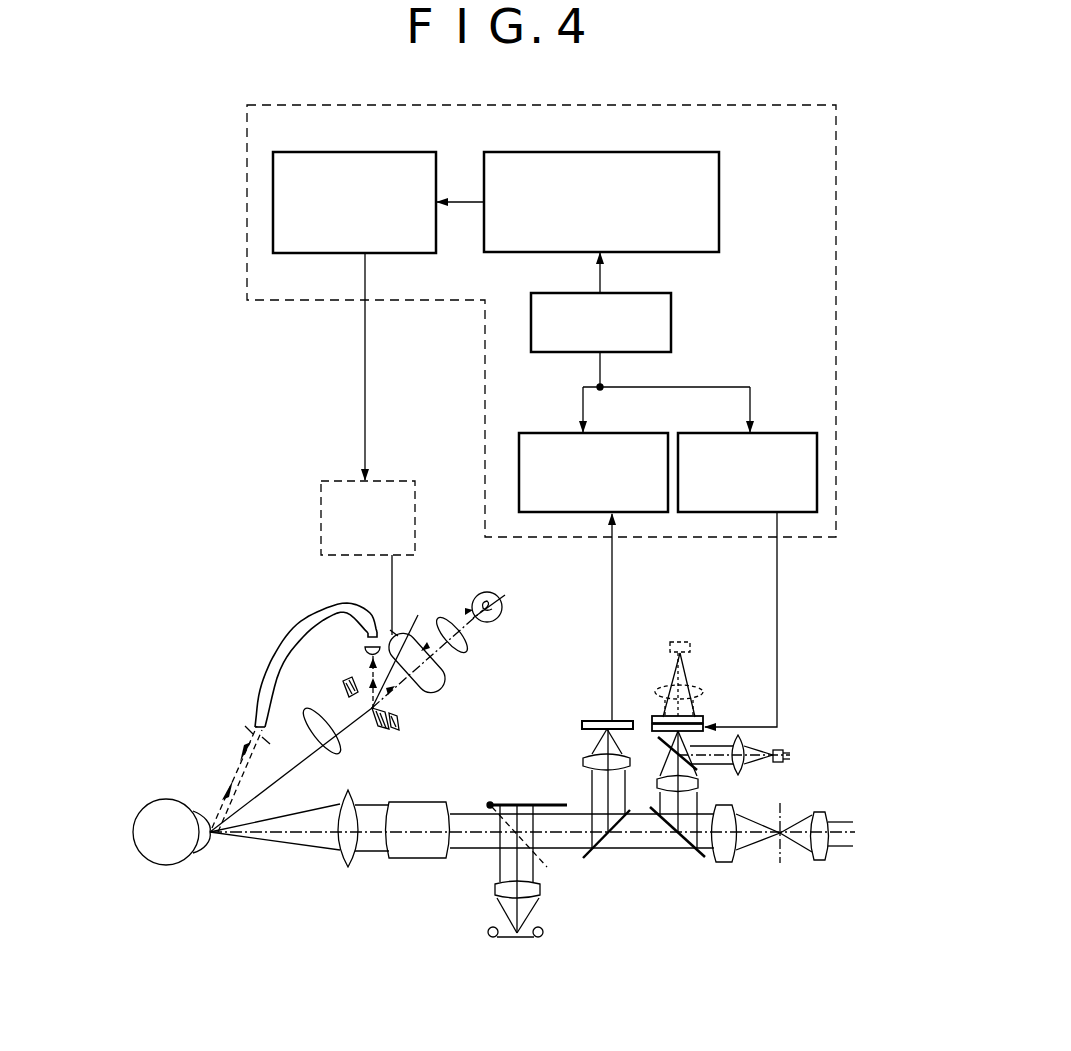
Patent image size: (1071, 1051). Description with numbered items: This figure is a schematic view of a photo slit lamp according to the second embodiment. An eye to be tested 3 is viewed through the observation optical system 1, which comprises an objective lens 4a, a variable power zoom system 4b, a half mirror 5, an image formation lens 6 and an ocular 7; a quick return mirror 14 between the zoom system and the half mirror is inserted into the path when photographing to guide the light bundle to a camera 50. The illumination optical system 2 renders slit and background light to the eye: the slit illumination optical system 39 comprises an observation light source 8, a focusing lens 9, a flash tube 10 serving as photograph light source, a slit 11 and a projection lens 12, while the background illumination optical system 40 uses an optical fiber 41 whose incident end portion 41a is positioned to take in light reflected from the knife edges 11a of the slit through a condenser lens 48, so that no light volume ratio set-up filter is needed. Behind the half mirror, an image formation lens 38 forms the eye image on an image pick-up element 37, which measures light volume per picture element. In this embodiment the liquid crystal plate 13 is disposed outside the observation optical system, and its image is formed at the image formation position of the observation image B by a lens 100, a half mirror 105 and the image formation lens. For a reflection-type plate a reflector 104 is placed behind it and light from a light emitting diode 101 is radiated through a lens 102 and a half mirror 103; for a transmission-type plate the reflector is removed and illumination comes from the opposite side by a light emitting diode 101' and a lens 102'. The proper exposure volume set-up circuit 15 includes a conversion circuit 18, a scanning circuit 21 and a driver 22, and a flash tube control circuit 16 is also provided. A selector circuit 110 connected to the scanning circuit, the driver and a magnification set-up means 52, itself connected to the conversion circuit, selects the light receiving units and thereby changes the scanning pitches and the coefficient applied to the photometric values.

The observation optical system 1 is at (671, 876).
The illumination optical system 2 is at (266, 668).
The eye to be tested 3 is at (184, 842).
The objective lens 4a is at (346, 867).
The variable power zoom system 4b is at (421, 858).
The half mirror 5 is at (590, 858).
The image formation lens 6 is at (726, 856).
The ocular 7 is at (823, 856).
The observation light source 8 is at (491, 620).
The focusing lens 9 is at (462, 650).
The flash tube 10 is at (429, 689).
The slit 11 is at (379, 727).
The knife edges 11a is at (357, 677).
The projection lens 12 is at (308, 727).
The liquid crystal plate 13 is at (655, 724).
The quick return mirror 14 is at (520, 804).
The proper exposure volume set-up circuit 15 is at (785, 108).
The flash tube control circuit 16 is at (406, 481).
The conversion circuit 18 is at (404, 152).
The scanning circuit 21 is at (610, 433).
The driver 22 is at (762, 433).
The image pick-up element 37 is at (602, 720).
The image formation lens 38 is at (584, 760).
The slit illumination optical system 39 is at (388, 743).
The background illumination optical system 40 is at (316, 640).
The optical fiber 41 is at (290, 640).
The incident end portion 41a is at (363, 645).
The condenser lens 48 is at (396, 633).
The camera 50 is at (533, 914).
The magnification set-up means 52 is at (694, 152).
The lens 100 is at (700, 786).
The light emitting diode 101 is at (811, 745).
The light emitting diode 101' is at (715, 644).
The lens 102 is at (751, 739).
The lens 102' is at (710, 689).
The half mirror 103 is at (660, 740).
The reflector 104 is at (704, 719).
The half mirror 105 is at (700, 858).
The selector circuit 110 is at (642, 293).
The observation image B is at (780, 864).